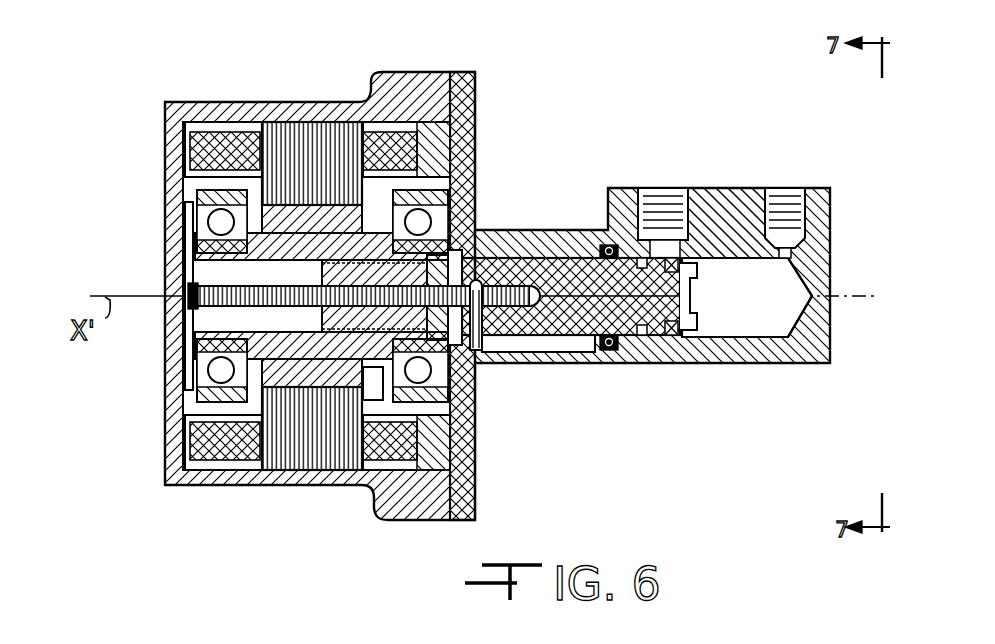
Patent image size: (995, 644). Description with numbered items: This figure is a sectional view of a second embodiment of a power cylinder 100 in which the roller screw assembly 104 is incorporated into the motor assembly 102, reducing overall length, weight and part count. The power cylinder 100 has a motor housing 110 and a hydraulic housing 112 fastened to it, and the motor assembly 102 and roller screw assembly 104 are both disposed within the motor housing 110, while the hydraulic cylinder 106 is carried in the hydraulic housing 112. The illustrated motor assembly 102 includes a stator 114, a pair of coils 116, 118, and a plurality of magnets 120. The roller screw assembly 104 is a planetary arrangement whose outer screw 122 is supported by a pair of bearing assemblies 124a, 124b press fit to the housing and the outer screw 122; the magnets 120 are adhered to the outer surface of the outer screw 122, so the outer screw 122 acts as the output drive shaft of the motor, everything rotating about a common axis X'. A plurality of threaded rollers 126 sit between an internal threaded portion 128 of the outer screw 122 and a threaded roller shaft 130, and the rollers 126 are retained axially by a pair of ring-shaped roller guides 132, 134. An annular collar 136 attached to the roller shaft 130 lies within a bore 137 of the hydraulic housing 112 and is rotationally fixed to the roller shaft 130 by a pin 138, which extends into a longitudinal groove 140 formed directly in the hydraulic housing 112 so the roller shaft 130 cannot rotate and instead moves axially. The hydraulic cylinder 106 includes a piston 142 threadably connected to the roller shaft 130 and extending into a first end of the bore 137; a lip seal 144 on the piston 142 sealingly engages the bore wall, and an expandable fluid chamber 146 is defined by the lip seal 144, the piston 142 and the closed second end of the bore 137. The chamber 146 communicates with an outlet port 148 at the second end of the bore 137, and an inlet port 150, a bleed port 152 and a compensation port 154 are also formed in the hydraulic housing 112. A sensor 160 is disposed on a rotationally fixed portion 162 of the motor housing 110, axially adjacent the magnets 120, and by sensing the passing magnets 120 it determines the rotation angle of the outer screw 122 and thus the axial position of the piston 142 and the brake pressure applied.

The power cylinder 100 is at (592, 96).
The motor assembly 102 is at (298, 108).
The roller screw assembly 104 is at (378, 210).
The hydraulic cylinder 106 is at (630, 140).
The motor housing 110 is at (443, 26).
The hydraulic housing 112 is at (470, 117).
The stator 114 is at (298, 372).
The coil 116 is at (200, 440).
The coil 118 is at (470, 470).
The magnets 120 is at (262, 395).
The outer screw 122 is at (190, 254).
The bearing assembly 124a is at (208, 210).
The bearing assembly 124b is at (445, 205).
The threaded rollers 126 is at (296, 328).
The internal threaded portion 128 is at (463, 362).
The roller shaft 130 is at (195, 316).
The roller guide 132 is at (293, 274).
The roller guide 134 is at (442, 255).
The annular collar 136 is at (495, 262).
The bore 137 is at (762, 363).
The pin 138 is at (477, 352).
The longitudinal groove 140 is at (555, 345).
The piston 142 is at (605, 350).
The lip seal 144 is at (695, 363).
The expandable fluid chamber 146 is at (772, 288).
The outlet port 148 is at (792, 192).
The inlet port 150 is at (652, 192).
The bleed port 152 is at (609, 245).
The compensation port 154 is at (710, 200).
The sensor 160 is at (325, 378).
The portion of the motor housing 162 is at (374, 390).